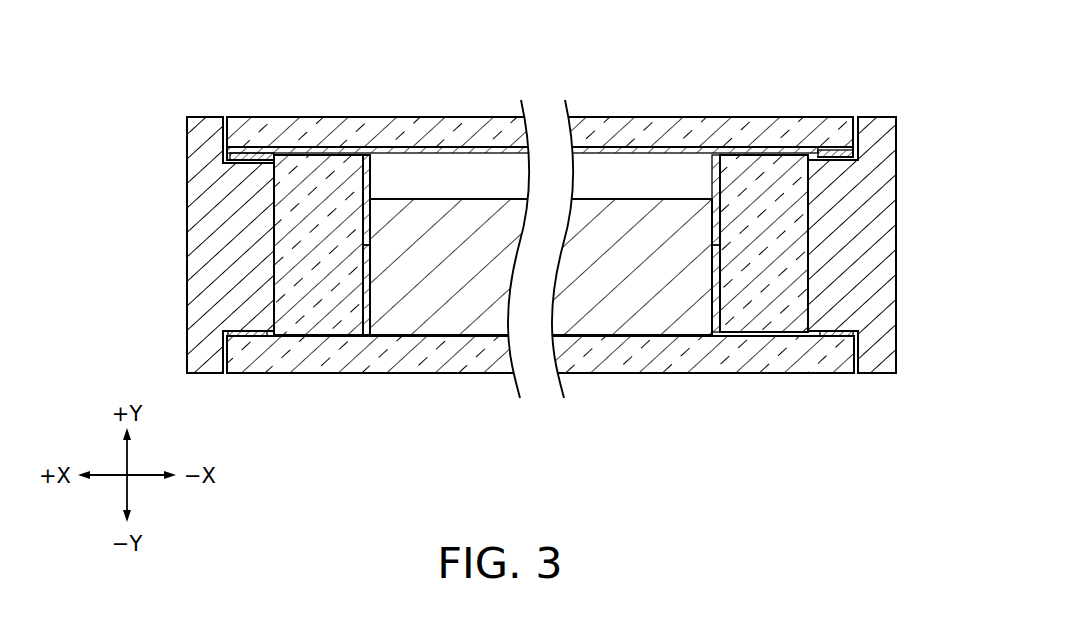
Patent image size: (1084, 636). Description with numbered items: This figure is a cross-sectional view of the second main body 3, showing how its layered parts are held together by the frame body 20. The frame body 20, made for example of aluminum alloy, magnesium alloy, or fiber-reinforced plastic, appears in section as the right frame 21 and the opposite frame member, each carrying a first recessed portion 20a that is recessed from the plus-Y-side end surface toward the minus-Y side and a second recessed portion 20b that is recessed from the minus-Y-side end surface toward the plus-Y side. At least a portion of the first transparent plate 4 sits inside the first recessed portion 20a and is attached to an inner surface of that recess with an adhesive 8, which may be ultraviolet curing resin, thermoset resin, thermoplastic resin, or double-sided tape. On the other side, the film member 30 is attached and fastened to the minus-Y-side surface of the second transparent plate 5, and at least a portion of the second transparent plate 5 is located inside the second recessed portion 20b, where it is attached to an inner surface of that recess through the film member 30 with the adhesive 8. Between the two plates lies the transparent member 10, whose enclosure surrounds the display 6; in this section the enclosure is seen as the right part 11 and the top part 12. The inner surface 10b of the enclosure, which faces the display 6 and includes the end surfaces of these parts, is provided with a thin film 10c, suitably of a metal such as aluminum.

The second main body 3 is at (164, 124).
The first transparent plate 4 is at (730, 360).
The second transparent plate 5 is at (757, 127).
The display 6 is at (618, 313).
The adhesive 8 is at (254, 153).
The transparent member 10 is at (338, 352).
The inner surface 10b is at (370, 308).
The thin film 10c is at (370, 183).
The right part 11 is at (780, 310).
The top part 12 is at (338, 178).
The frame body 20 is at (205, 110).
The first recessed portion 20a is at (228, 133).
The second recessed portion 20b is at (227, 360).
The right frame 21 is at (873, 238).
The film member 30 is at (633, 148).